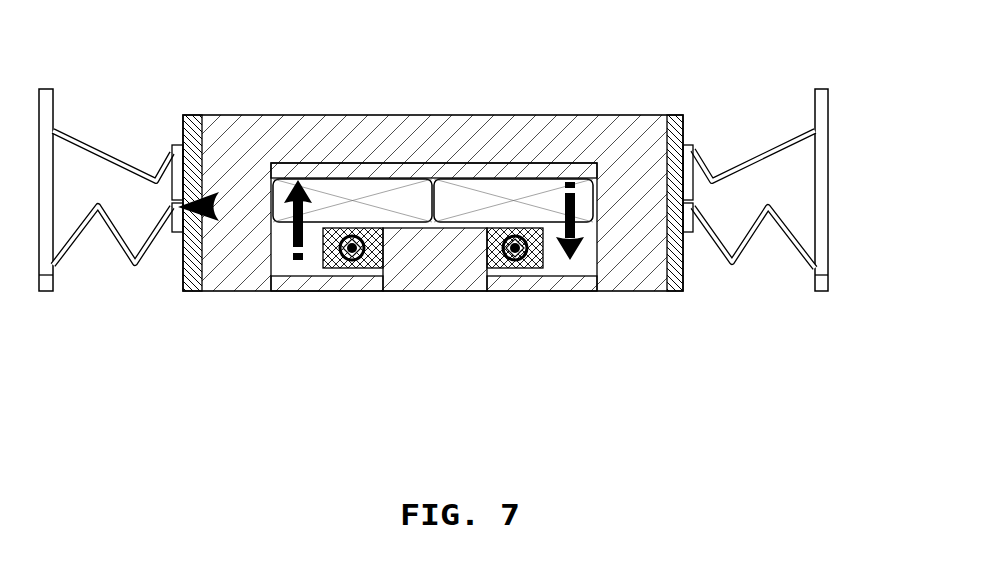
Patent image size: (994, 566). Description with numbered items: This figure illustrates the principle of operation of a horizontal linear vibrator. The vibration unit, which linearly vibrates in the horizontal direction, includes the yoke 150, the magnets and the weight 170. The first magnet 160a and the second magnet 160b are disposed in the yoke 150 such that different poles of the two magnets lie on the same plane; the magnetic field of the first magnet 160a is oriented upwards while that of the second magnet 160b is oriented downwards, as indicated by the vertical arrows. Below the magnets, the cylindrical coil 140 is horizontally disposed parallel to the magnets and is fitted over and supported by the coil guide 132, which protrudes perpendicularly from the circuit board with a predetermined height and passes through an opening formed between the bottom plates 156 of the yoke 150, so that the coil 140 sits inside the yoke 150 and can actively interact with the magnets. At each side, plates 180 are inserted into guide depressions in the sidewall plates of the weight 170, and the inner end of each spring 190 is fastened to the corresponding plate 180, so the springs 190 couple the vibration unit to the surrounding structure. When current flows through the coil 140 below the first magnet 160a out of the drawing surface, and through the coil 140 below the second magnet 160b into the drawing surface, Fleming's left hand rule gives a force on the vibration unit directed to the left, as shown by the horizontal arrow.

The coil guide 132 is at (428, 272).
The cylindrical coil 140 is at (533, 262).
The yoke 150 is at (440, 172).
The bottom plates 156 is at (328, 283).
The first magnet 160a is at (372, 187).
The second magnet 160b is at (530, 185).
The weight 170 is at (593, 137).
The plates 180 is at (677, 128).
The springs 190 is at (820, 190).